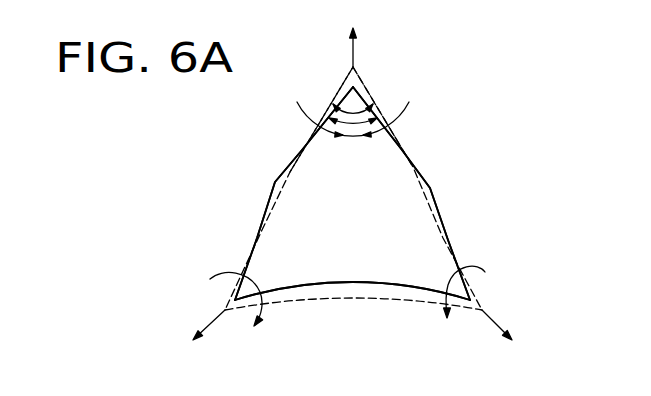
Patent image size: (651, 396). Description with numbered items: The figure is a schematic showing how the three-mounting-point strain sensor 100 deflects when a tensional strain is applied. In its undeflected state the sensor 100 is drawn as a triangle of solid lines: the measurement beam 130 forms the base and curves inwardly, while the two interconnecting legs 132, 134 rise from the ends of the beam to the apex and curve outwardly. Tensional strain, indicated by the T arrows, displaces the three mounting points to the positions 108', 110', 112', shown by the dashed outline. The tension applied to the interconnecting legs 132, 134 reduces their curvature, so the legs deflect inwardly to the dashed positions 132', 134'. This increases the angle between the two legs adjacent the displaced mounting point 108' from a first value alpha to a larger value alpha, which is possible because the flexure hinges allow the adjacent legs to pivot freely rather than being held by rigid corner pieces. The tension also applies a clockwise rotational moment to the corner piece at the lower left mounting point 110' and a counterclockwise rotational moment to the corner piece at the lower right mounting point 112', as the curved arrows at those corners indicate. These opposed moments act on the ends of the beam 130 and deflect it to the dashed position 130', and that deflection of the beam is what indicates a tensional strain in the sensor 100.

The strain sensor 100 is at (484, 91).
The displaced mounting point 108' is at (359, 111).
The displaced mounting point 110' is at (231, 338).
The displaced mounting point 112' is at (481, 338).
The measurement beam 130 is at (352, 267).
The deflected beam position 130' is at (353, 329).
The interconnecting leg 132 is at (278, 193).
The deflected interconnecting leg position 132' is at (289, 188).
The interconnecting leg 134 is at (424, 193).
The deflected interconnecting leg position 134' is at (417, 188).